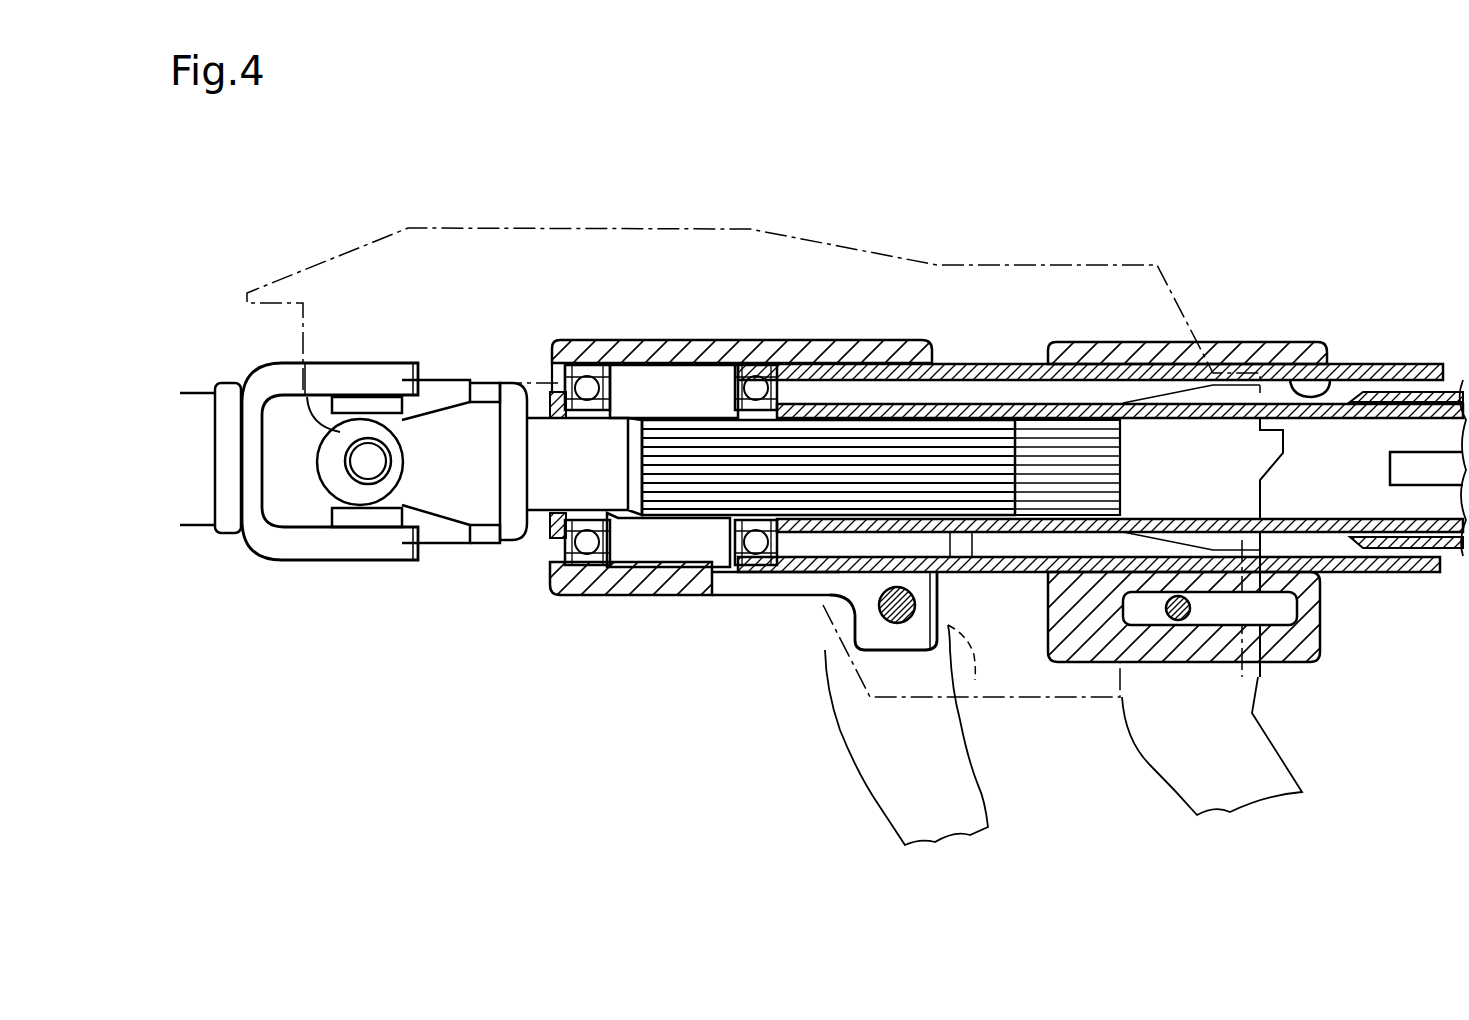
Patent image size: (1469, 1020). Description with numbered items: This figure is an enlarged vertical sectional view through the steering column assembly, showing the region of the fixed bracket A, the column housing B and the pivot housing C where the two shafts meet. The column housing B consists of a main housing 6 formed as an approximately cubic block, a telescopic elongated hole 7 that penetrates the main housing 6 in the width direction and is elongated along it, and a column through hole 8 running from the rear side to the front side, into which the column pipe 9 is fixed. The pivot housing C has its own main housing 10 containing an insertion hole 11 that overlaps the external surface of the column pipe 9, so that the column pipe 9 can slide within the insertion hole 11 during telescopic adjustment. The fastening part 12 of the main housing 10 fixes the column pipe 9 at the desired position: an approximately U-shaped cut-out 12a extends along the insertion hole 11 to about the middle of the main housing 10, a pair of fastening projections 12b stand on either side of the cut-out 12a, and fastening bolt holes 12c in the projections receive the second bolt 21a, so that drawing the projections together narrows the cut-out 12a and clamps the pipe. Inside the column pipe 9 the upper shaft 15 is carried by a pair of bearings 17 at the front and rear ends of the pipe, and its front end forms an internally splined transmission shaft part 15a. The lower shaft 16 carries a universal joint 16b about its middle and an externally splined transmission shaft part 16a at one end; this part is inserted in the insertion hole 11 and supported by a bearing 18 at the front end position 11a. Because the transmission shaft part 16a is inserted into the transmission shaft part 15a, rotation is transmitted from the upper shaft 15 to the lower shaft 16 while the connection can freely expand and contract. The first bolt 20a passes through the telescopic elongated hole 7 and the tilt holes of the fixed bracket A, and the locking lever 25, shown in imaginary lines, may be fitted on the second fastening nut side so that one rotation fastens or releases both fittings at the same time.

The fixed bracket A is at (774, 223).
The column housing B is at (1276, 330).
The pivot housing C is at (692, 606).
The main housing 6 is at (1335, 632).
The telescopic elongated hole 7 is at (1143, 618).
The column through hole 8 is at (1338, 363).
The column pipe 9 is at (985, 362).
The main housing 10 is at (672, 350).
The insertion hole 11 is at (702, 400).
The front end position of the insertion hole 11a is at (597, 540).
The fastening part 12 is at (851, 630).
The cut-out 12a is at (748, 584).
The fastening projections 12b is at (872, 652).
The fastening bolt holes 12c is at (957, 665).
The upper shaft 15 is at (950, 398).
The transmission shaft part 15a is at (1118, 443).
The lower shaft 16 is at (210, 538).
The transmission shaft part 16a is at (958, 488).
The universal joint 16b is at (324, 562).
The bearings 17 is at (766, 392).
The bearing 18 is at (560, 547).
The first bolt 20a is at (1190, 620).
The second bolt 21a is at (905, 625).
The locking lever 25 is at (885, 812).